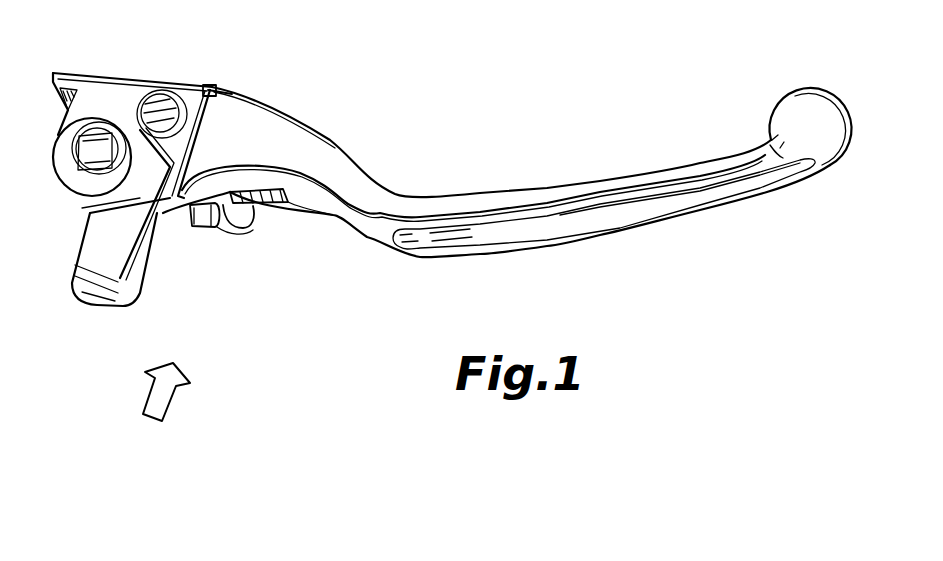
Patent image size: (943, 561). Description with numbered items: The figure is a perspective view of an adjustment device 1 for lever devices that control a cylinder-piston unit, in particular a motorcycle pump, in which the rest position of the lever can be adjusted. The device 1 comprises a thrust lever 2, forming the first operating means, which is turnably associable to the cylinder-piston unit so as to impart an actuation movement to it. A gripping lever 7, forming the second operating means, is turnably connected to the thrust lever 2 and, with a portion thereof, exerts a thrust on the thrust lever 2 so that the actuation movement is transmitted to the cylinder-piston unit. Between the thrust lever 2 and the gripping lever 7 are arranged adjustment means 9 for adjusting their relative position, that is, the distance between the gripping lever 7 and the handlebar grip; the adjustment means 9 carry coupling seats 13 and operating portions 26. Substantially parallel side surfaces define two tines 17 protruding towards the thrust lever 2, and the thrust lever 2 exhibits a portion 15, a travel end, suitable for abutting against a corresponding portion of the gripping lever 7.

The adjustment device 1 is at (452, 228).
The thrust lever 2 is at (108, 96).
The gripping lever 7 is at (623, 174).
The adjustment means 9 is at (261, 273).
The coupling means 13 is at (212, 230).
The portion 15 is at (208, 88).
The tines 17 is at (214, 92).
The operating portions 26 is at (257, 227).